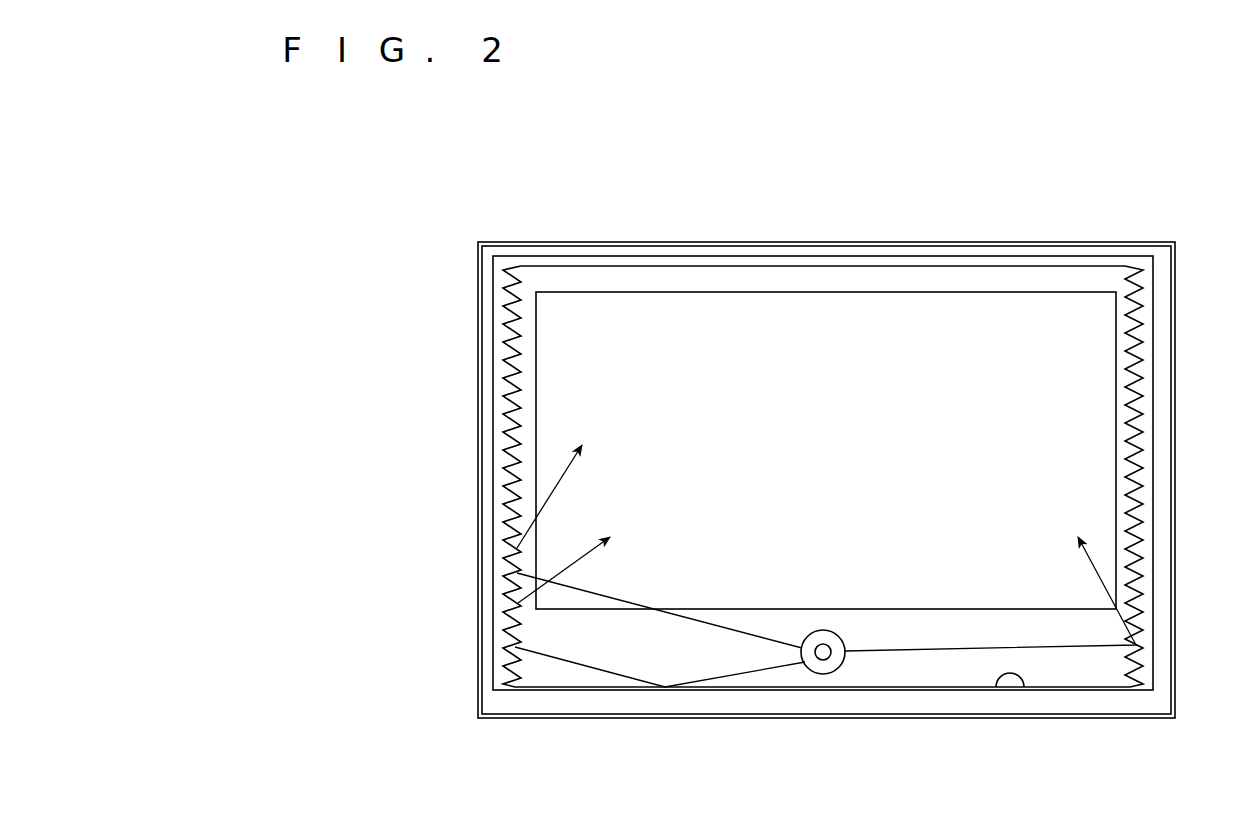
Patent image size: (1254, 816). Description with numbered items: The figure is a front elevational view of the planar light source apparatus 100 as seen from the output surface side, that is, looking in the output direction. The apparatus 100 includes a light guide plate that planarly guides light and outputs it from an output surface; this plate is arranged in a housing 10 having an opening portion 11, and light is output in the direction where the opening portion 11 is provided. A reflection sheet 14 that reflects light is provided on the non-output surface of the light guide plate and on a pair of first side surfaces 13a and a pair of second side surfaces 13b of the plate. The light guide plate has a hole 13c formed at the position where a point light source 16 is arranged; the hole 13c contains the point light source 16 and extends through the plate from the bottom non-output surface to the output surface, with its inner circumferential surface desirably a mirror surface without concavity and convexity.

The planar light source apparatus 100 is at (1209, 220).
The housing 10 is at (1176, 287).
The opening portion 11 is at (1117, 413).
The first side surfaces 13a is at (993, 690).
The second side surfaces 13b is at (1140, 313).
The hole 13c is at (822, 674).
The reflection sheet 14 is at (1155, 503).
The point light source 16 is at (831, 646).